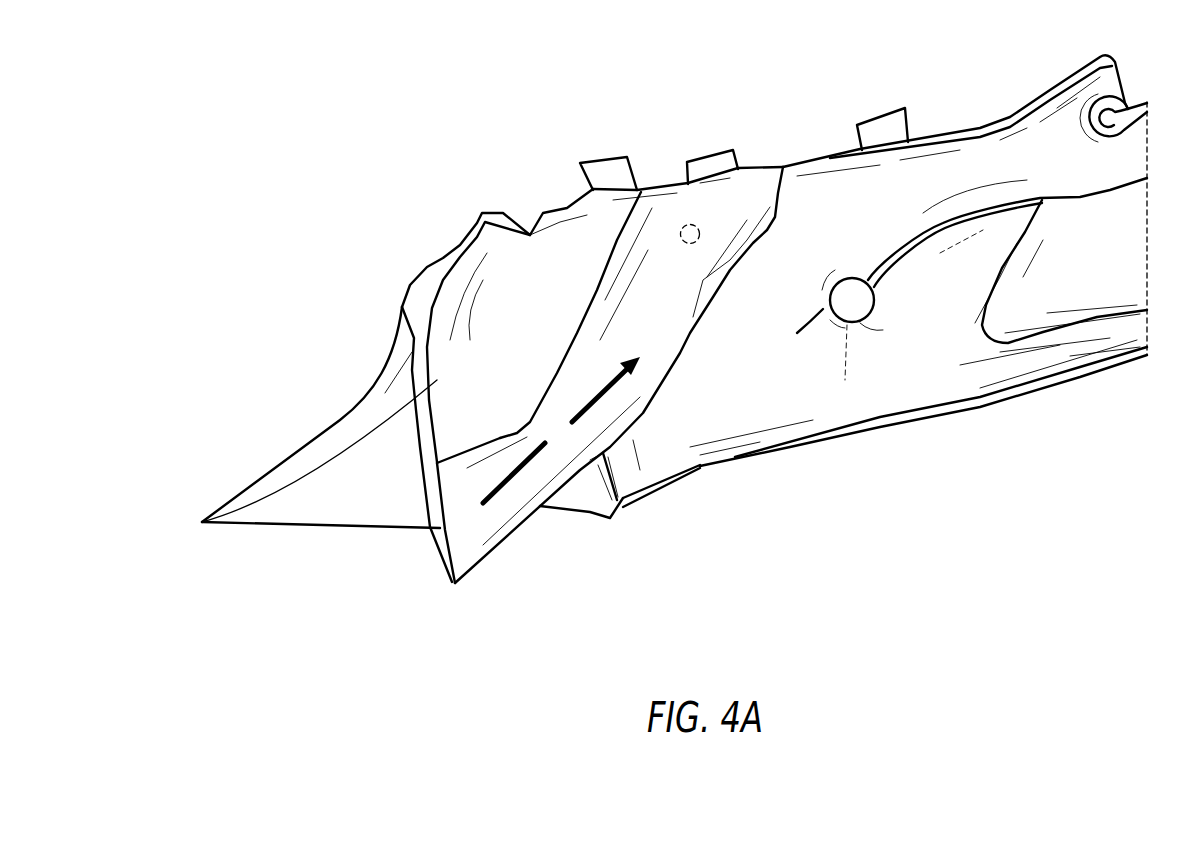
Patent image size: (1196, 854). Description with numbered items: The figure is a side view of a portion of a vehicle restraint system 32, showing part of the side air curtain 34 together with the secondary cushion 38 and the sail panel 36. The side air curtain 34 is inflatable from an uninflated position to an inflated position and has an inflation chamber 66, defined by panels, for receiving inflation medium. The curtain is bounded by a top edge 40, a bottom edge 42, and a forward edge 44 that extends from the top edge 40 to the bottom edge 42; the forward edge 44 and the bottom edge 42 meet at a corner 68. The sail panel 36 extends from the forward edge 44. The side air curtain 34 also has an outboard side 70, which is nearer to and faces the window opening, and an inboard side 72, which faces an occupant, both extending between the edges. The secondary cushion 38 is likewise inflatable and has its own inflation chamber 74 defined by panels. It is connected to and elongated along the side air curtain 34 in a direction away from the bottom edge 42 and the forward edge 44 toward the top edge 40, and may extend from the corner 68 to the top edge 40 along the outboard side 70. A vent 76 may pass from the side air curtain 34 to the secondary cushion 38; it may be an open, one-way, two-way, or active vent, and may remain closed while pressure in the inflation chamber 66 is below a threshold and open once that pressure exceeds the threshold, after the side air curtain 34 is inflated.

The restraint system 32 is at (262, 150).
The side air curtain 34 is at (742, 456).
The sail panel 36 is at (320, 523).
The secondary cushion 38 is at (637, 417).
The top edge 40 is at (840, 150).
The bottom edge 42 is at (893, 425).
The forward edge 44 is at (417, 343).
The inflation chamber 66 is at (927, 372).
The corner 68 is at (520, 527).
The outboard side 70 is at (983, 365).
The inboard side 72 is at (712, 472).
The inflation chamber 74 is at (653, 275).
The vent 76 is at (689, 225).